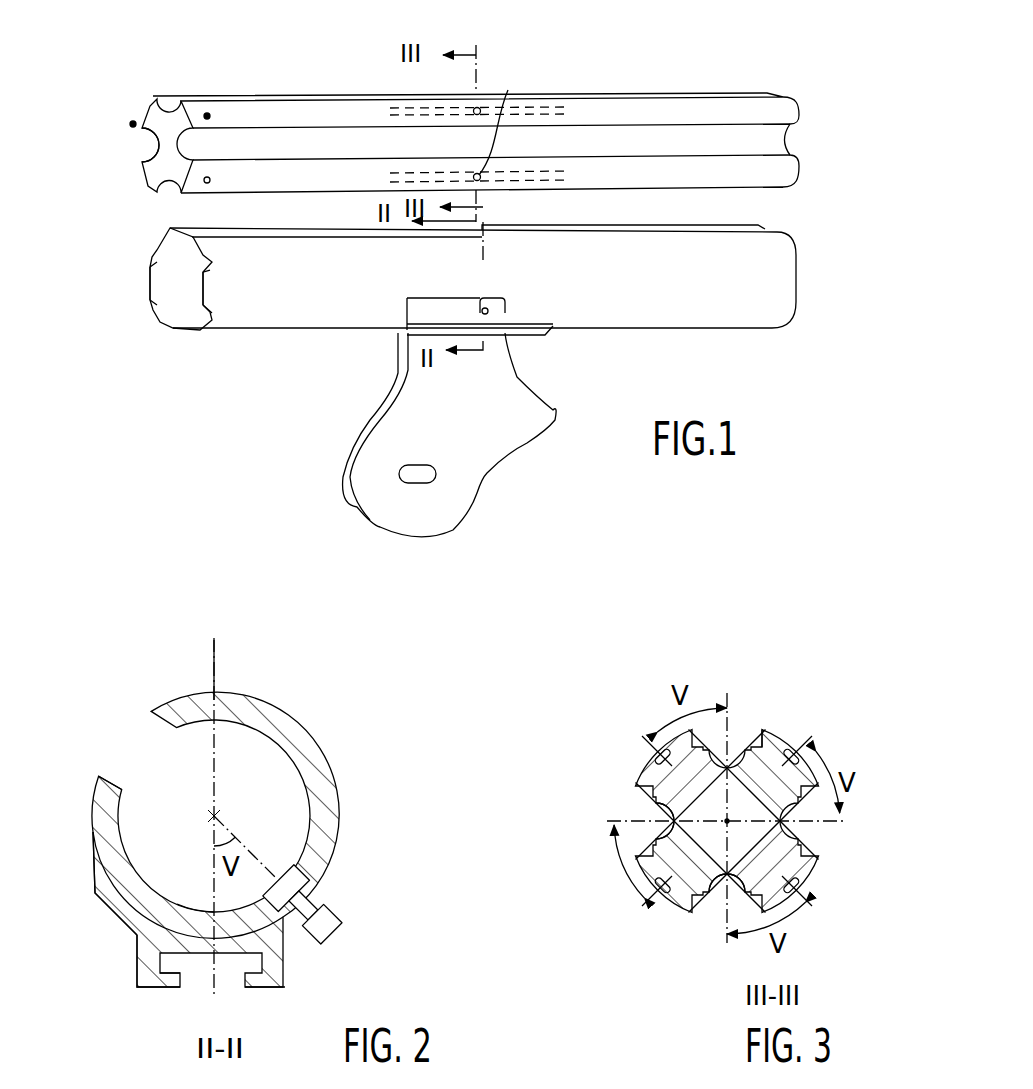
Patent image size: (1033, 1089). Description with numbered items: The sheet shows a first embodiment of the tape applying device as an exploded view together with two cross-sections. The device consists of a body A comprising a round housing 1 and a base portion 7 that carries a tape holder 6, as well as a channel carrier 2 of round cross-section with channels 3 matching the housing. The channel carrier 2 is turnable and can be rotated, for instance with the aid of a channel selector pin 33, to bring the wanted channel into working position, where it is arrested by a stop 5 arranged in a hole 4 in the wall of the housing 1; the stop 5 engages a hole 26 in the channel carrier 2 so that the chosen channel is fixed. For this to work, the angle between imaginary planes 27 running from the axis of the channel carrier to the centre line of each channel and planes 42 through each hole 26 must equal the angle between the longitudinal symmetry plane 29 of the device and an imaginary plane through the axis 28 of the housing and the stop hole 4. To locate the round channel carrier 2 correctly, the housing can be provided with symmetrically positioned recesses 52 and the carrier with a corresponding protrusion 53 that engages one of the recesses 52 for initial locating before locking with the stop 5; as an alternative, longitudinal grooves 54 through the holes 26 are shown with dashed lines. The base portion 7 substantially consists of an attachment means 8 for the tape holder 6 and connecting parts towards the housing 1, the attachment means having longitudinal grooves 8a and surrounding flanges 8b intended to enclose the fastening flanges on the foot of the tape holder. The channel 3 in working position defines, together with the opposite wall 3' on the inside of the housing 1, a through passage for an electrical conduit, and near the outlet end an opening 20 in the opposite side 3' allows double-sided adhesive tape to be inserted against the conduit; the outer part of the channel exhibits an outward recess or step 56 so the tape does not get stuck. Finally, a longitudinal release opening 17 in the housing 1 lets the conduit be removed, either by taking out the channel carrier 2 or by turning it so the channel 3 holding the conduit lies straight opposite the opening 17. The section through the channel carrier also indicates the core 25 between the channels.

In FIG. 1, the round housing 1 is at (645, 314).
In FIG. 2, the round housing 1 is at (252, 710).
In FIG. 1, the channel carrier 2 is at (593, 91).
In FIG. 3, the channel carrier 2 is at (733, 808).
In FIG. 1, the channel 3 is at (133, 168).
In FIG. 3, the channel 3 is at (675, 860).
In FIG. 1, the opposite wall 3' is at (156, 322).
In FIG. 2, the opposite wall 3' is at (190, 887).
In FIG. 1, the hole 4 is at (483, 299).
In FIG. 2, the hole 4 is at (302, 894).
In FIG. 1, the stop 5 is at (505, 313).
In FIG. 2, the stop 5 is at (341, 914).
In FIG. 1, the tape holder 6 is at (506, 456).
In FIG. 1, the base portion 7 is at (405, 299).
In FIG. 2, the base portion 7 is at (98, 897).
In FIG. 2, the attachment means 8 is at (140, 966).
In FIG. 2, the longitudinal grooves 8a is at (272, 970).
In FIG. 2, the surrounding flanges 8b is at (180, 990).
In FIG. 1, the longitudinal release opening 17 is at (626, 225).
In FIG. 2, the longitudinal release opening 17 is at (110, 764).
In FIG. 1, the opening 20 is at (393, 333).
In FIG. 3, the core 25 is at (729, 822).
In FIG. 1, the hole 26 is at (480, 110).
In FIG. 3, the hole 26 is at (803, 886).
In FIG. 3, the imaginary plane 27 is at (850, 821).
In FIG. 2, the axis of the housing 28 is at (215, 815).
In FIG. 2, the longitudinal symmetry plane 29 is at (209, 680).
In FIG. 1, the channel selector pin 33 is at (133, 123).
In FIG. 3, the plane 42 is at (813, 906).
In FIG. 1, the recess 52 is at (208, 333).
In FIG. 1, the protrusion 53 is at (207, 115).
In FIG. 1, the longitudinal grooves 54 is at (440, 182).
In FIG. 3, the recess or step 56 is at (758, 742).
In FIG. 1, the body A is at (699, 331).
In FIG. 2, the body A is at (301, 715).